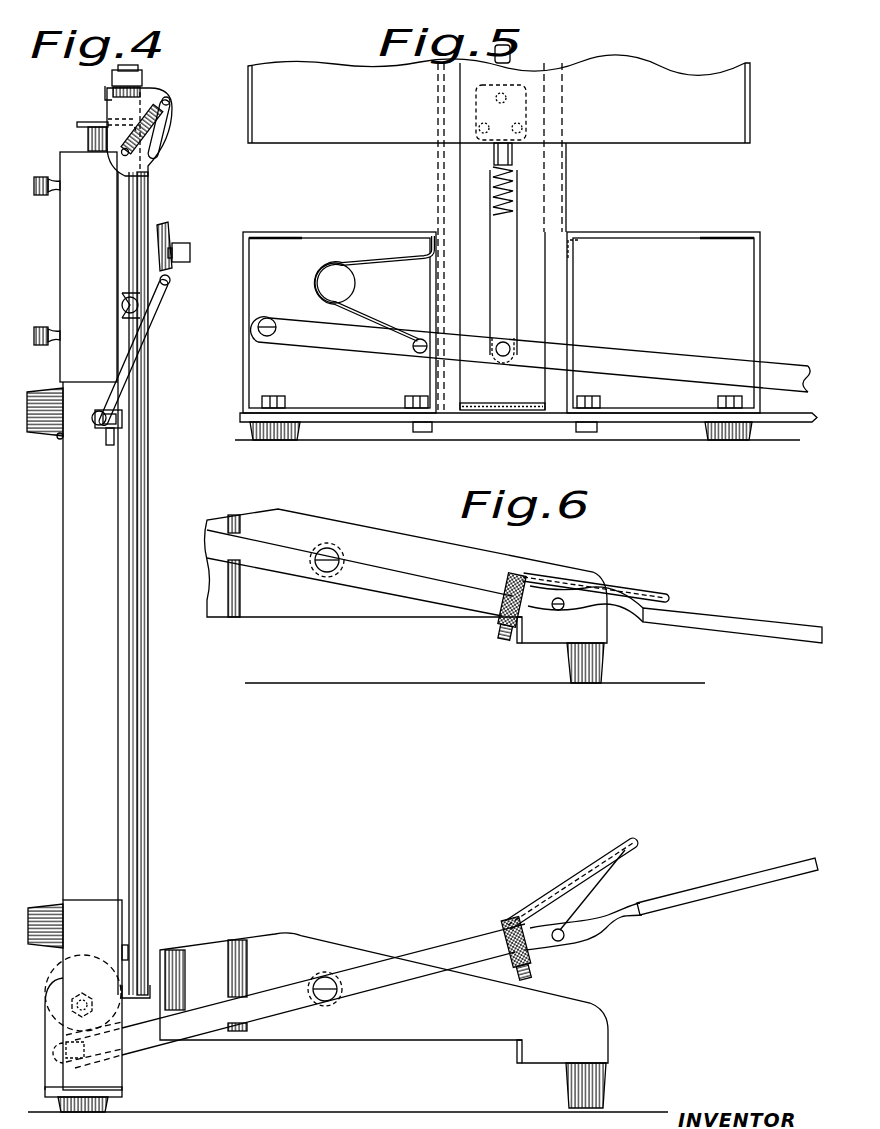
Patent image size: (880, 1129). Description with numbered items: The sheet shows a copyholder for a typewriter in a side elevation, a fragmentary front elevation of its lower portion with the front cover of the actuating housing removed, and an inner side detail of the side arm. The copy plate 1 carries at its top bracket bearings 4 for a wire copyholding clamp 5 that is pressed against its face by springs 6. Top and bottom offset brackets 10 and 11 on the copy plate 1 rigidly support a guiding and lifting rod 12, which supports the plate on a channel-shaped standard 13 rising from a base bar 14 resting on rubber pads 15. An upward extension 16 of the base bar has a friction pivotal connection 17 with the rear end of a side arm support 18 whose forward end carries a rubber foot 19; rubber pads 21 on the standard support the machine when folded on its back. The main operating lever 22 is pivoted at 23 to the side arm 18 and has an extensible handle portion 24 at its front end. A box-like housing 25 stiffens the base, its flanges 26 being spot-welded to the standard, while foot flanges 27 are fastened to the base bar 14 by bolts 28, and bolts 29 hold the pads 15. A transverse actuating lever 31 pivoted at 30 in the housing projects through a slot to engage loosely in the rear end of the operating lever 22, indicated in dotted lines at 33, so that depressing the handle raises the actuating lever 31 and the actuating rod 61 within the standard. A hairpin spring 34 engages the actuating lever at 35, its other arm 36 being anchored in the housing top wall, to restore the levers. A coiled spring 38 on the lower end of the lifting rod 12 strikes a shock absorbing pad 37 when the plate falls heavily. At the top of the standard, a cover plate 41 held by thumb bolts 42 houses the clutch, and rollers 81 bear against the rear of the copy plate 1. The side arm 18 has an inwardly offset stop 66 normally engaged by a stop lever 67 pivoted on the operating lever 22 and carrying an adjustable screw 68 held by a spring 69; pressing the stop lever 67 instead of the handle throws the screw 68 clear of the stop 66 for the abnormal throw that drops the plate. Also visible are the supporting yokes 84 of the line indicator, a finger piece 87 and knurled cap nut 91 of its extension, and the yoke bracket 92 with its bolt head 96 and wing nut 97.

In FIG. 4, the copy plate 1 is at (146, 840).
In FIG. 5, the copy plate 1 is at (353, 145).
In FIG. 4, the bracket bearings 4 is at (162, 93).
In FIG. 4, the copyholding clamp 5 is at (164, 146).
In FIG. 4, the springs 6 is at (158, 127).
In FIG. 4, the top bracket 10 is at (100, 121).
In FIG. 4, the bottom bracket 11 is at (128, 995).
In FIG. 5, the bottom bracket 11 is at (480, 146).
In FIG. 4, the guiding and lifting rod 12 is at (88, 135).
In FIG. 5, the guiding and lifting rod 12 is at (512, 58).
In FIG. 4, the standard 13 is at (76, 806).
In FIG. 5, the standard 13 is at (565, 200).
In FIG. 4, the base bar 14 is at (122, 1092).
In FIG. 5, the base bar 14 is at (670, 432).
In FIG. 4, the rubber pads 15 is at (100, 1112).
In FIG. 5, the rubber pads 15 is at (283, 441).
In FIG. 4, the upward extension 16 is at (52, 1040).
In FIG. 4, the pivotal connection 17 is at (58, 980).
In FIG. 4, the side arm support 18 is at (300, 945).
In FIG. 6, the side arm support 18 is at (334, 526).
In FIG. 4, the rubber foot or pad 19 is at (606, 1086).
In FIG. 6, the rubber foot or pad 19 is at (603, 672).
In FIG. 4, the rubber pads 21 is at (42, 438).
In FIG. 4, the operating lever 22 is at (444, 945).
In FIG. 6, the operating lever 22 is at (410, 584).
In FIG. 4, the pivot 23 is at (335, 1000).
In FIG. 6, the pivot 23 is at (322, 574).
In FIG. 4, the handle portion 24 is at (710, 890).
In FIG. 6, the handle portion 24 is at (735, 626).
In FIG. 4, the box-like housing 25 is at (86, 995).
In FIG. 5, the box-like housing 25 is at (663, 322).
In FIG. 5, the flanges 26 is at (572, 264).
In FIG. 5, the foot flanges 27 is at (603, 405).
In FIG. 5, the bolts 28 is at (585, 434).
In FIG. 5, the bolts 29 is at (288, 400).
In FIG. 5, the pivot 30 is at (270, 320).
In FIG. 4, the actuating lever 31 is at (90, 1060).
In FIG. 5, the actuating lever 31 is at (647, 356).
In FIG. 4, the engagement of reduced end in operating lever 33 is at (118, 1068).
In FIG. 5, the hairpin spring 34 is at (356, 284).
In FIG. 5, the spring engagement point 35 is at (415, 353).
In FIG. 5, the spring arm 36 is at (368, 245).
In FIG. 5, the shock absorbing pad 37 is at (488, 404).
In FIG. 5, the coiled spring 38 is at (515, 186).
In FIG. 4, the cover plate 41 is at (77, 268).
In FIG. 4, the thumb bolts 42 is at (44, 200).
In FIG. 5, the actuating rod 61 is at (508, 300).
In FIG. 4, the stop 66 is at (520, 1060).
In FIG. 6, the stop 66 is at (518, 632).
In FIG. 4, the stop lever 67 is at (565, 885).
In FIG. 6, the stop lever 67 is at (612, 588).
In FIG. 4, the screw 68 is at (540, 945).
In FIG. 6, the screw 68 is at (500, 619).
In FIG. 4, the spring 69 is at (592, 889).
In FIG. 6, the spring 69 is at (562, 598).
In FIG. 4, the rollers 81 is at (122, 300).
In FIG. 4, the supporting bails or yokes 84 is at (160, 300).
In FIG. 4, the finger piece 87 is at (169, 238).
In FIG. 4, the knurled cap nut 91 is at (190, 250).
In FIG. 4, the bracket 92 is at (120, 420).
In FIG. 4, the bolt head 96 is at (118, 412).
In FIG. 4, the wing nut 97 is at (106, 440).